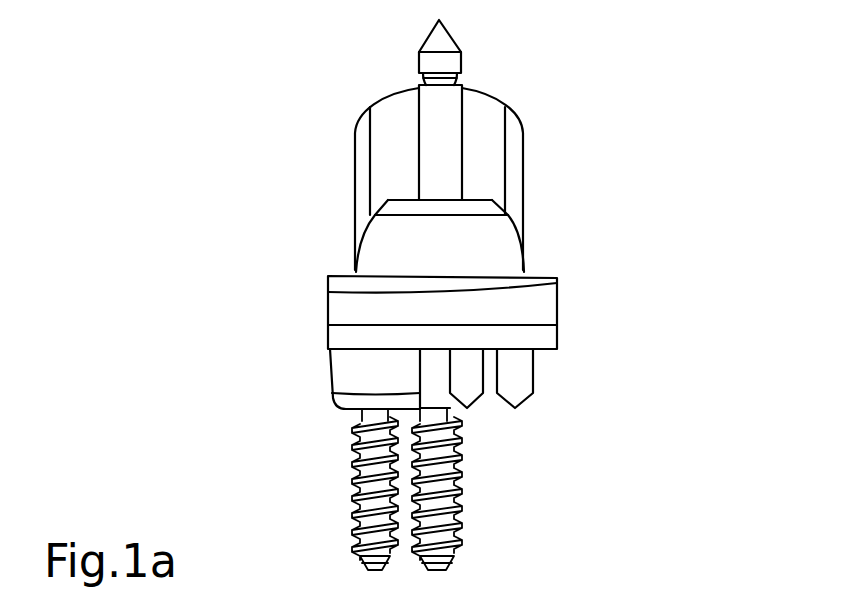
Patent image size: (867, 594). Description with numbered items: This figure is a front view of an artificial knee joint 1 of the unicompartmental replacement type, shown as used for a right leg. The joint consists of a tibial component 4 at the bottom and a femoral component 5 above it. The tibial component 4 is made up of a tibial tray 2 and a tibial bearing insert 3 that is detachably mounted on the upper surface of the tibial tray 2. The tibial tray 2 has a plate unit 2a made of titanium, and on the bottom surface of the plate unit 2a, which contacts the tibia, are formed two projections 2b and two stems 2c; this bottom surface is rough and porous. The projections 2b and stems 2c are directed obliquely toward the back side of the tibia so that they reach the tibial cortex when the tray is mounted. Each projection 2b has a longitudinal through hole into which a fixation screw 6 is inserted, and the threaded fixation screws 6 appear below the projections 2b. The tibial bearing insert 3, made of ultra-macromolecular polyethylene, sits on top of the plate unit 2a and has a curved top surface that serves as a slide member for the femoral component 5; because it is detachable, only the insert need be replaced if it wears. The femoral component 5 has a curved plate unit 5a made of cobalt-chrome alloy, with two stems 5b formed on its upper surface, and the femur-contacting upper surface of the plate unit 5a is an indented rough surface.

The artificial knee joint 1 is at (526, 83).
The femoral component 5 is at (585, 70).
The plate unit 5a is at (375, 237).
The stems 5b is at (437, 117).
The tibial component 4 is at (667, 282).
The tibial bearing insert 3 is at (574, 268).
The tibial tray 2 is at (578, 330).
The plate unit 2a is at (340, 338).
The projections 2b is at (342, 372).
The stems 2c is at (518, 373).
The fixation screw 6 is at (355, 481).